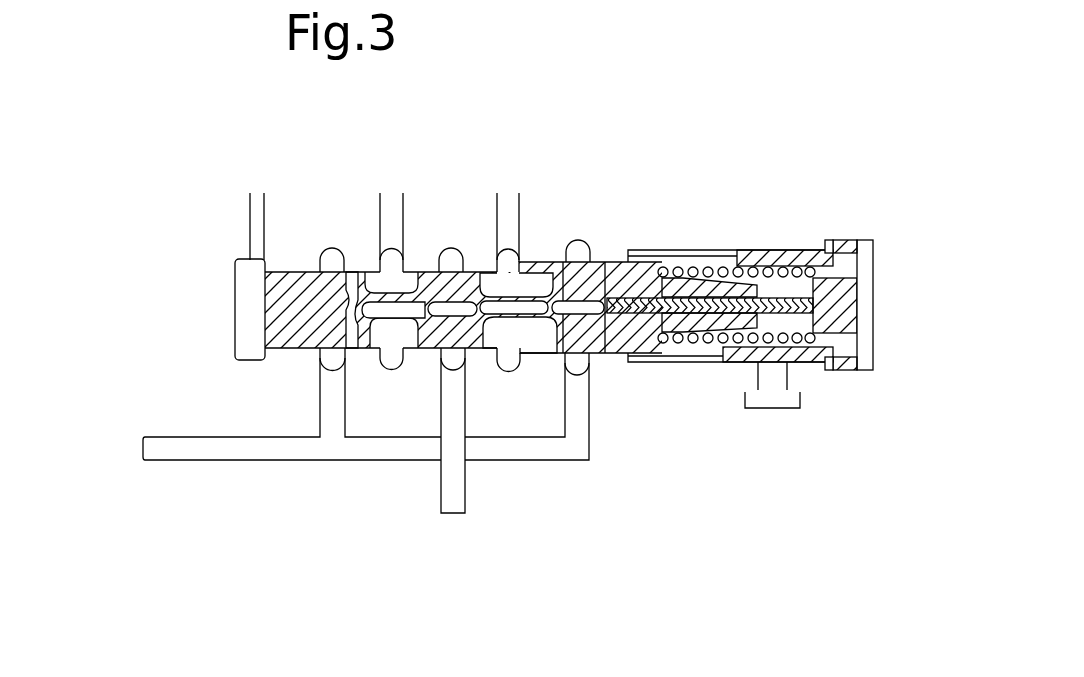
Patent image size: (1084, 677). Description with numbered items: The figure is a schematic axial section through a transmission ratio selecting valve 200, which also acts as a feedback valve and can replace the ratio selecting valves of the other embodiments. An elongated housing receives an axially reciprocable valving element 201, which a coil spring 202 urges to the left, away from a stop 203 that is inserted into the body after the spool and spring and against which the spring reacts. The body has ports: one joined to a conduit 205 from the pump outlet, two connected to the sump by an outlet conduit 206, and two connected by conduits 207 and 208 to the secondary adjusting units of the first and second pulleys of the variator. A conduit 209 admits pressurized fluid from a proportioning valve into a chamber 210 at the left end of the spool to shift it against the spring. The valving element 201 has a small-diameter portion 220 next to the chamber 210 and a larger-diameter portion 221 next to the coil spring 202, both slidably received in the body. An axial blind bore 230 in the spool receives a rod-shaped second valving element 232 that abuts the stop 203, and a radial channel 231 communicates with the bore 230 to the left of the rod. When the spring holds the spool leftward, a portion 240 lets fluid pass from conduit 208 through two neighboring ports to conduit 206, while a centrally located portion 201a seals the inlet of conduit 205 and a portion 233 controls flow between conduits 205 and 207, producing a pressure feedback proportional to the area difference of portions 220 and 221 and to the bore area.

The transmission ratio selecting valve 200 is at (545, 343).
The valving element 201 is at (460, 265).
The centrally located portion of the valving element 201a is at (475, 268).
The coil spring 202 is at (715, 277).
The stop 203 is at (858, 268).
The conduit 205 is at (450, 475).
The outlet conduit 206 is at (150, 450).
The conduit 207 is at (502, 208).
The conduit 208 is at (390, 207).
The conduit 209 is at (258, 192).
The chamber 210 is at (257, 283).
The small-diameter portion of the valving element 220 is at (283, 355).
The larger-diameter portion of the valving element 221 is at (612, 365).
The axial blind bore 230 is at (421, 335).
The radial channel 231 is at (372, 320).
The second valving element 232 is at (727, 353).
The portion of the valving element 233 is at (523, 270).
The portion of the valving element 240 is at (360, 270).